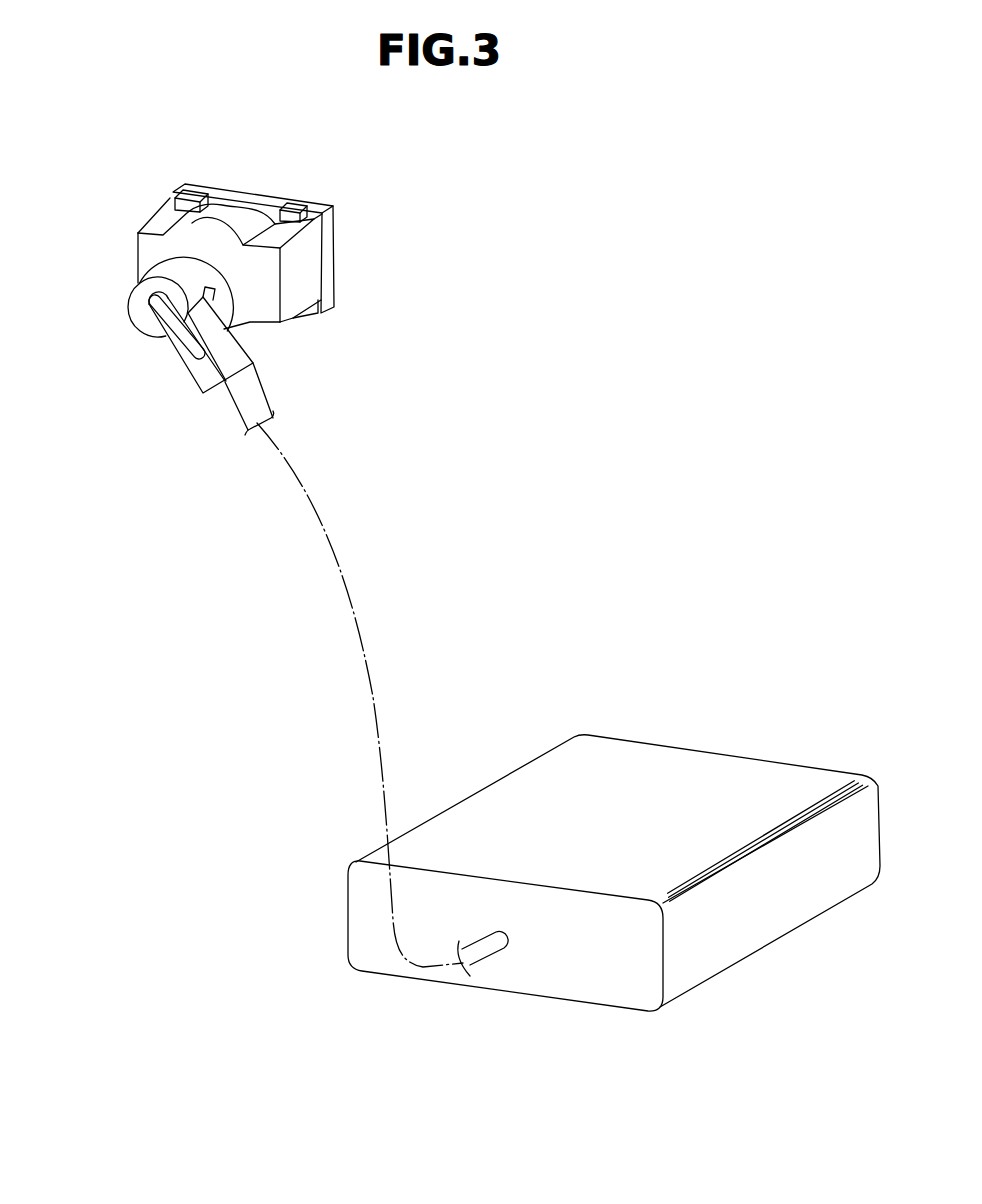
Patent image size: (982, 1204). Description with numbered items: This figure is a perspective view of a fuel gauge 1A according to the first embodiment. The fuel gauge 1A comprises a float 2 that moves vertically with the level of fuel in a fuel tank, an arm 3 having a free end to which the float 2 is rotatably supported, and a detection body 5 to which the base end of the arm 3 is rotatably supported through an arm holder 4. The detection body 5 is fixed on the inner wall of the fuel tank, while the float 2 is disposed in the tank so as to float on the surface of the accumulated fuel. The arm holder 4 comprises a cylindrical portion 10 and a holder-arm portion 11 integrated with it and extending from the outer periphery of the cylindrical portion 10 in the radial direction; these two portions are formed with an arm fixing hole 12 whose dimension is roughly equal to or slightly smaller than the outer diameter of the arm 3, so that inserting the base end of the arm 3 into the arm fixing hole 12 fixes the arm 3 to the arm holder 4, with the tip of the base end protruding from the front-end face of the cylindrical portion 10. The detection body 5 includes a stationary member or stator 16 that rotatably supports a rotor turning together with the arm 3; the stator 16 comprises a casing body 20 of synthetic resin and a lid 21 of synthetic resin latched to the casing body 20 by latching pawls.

The fuel gauge 1A is at (428, 328).
The float 2 is at (522, 812).
The arm 3 is at (234, 402).
The arm holder 4 is at (121, 297).
The detection body 5 is at (141, 213).
The cylindrical portion 10 is at (138, 290).
The holder-arm portion 11 is at (233, 348).
The arm fixing hole 12 is at (149, 322).
The stator 16 is at (428, 203).
The casing body 20 is at (313, 278).
The lid 21 is at (332, 243).